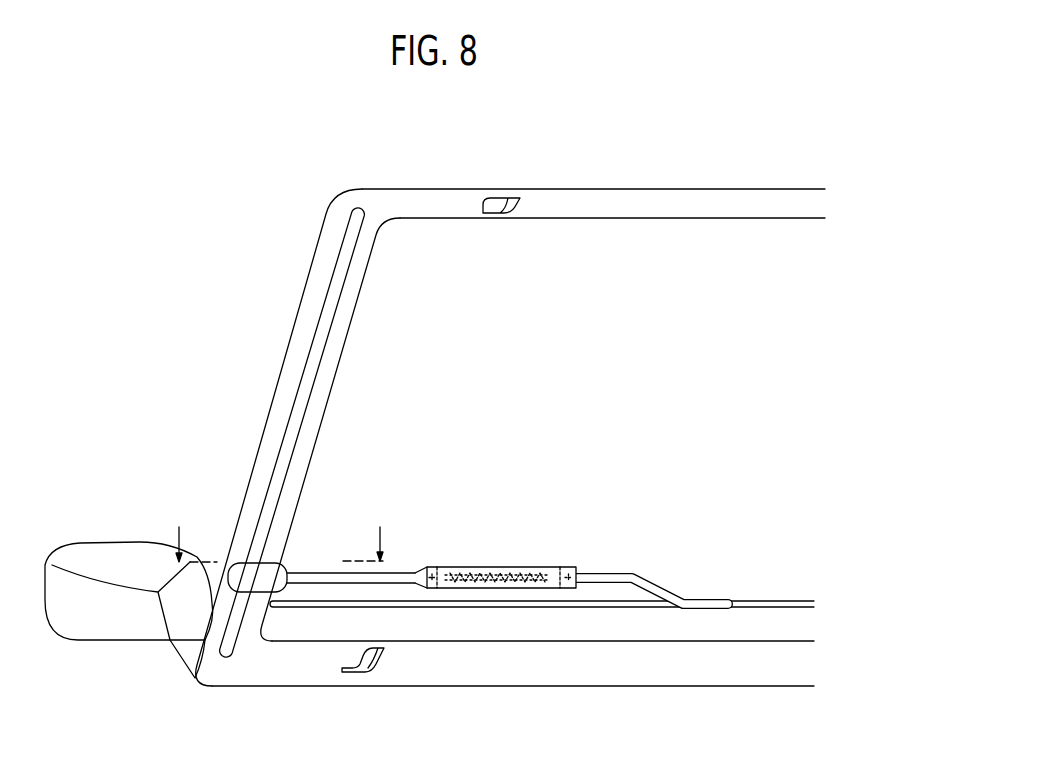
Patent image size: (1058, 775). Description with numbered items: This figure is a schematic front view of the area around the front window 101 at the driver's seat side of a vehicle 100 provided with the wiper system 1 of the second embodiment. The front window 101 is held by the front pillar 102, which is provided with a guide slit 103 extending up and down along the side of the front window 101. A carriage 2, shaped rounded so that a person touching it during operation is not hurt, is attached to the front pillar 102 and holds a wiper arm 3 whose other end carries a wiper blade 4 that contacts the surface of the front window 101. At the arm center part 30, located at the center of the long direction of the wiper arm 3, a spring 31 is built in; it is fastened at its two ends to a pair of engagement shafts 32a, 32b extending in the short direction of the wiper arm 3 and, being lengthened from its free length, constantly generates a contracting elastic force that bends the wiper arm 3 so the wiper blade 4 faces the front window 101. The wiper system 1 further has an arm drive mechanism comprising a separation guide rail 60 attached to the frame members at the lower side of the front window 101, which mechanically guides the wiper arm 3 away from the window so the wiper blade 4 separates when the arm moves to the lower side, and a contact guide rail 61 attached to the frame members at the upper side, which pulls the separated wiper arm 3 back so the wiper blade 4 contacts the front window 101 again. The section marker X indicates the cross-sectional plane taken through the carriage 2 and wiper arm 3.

The wiper system 1 is at (478, 597).
The carriage 2 is at (257, 585).
The wiper arm 3 is at (592, 568).
The wiper blade 4 is at (775, 605).
The arm center part 30 is at (492, 604).
The spring 31 is at (467, 567).
The engagement shaft 32a is at (418, 565).
The engagement shaft 32b is at (550, 567).
The separation guide rail 60 is at (372, 673).
The contact guide rail 61 is at (500, 200).
The vehicle 100 is at (502, 405).
The front window 101 is at (678, 235).
The front pillar 102 is at (290, 437).
The guide slit 103 is at (275, 493).
The section line X is at (280, 531).